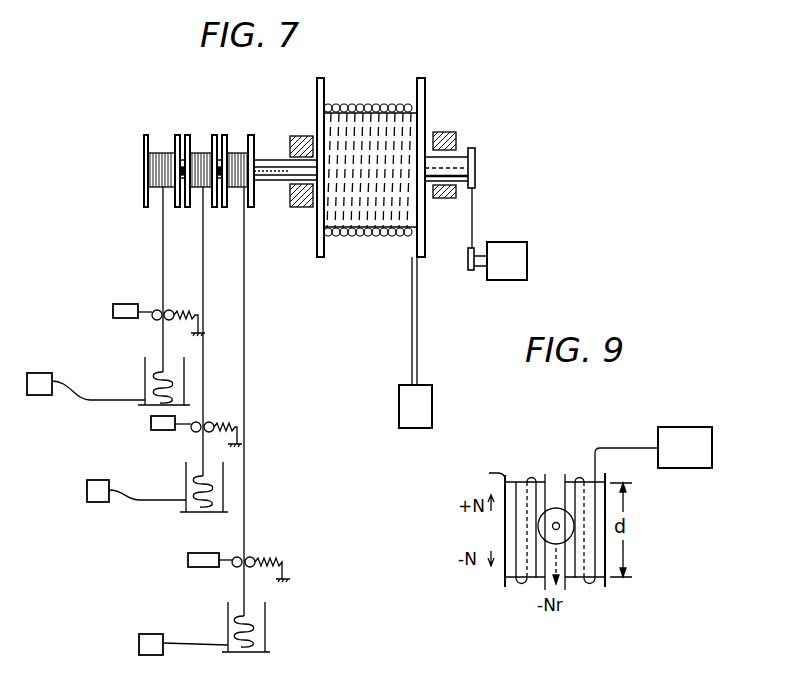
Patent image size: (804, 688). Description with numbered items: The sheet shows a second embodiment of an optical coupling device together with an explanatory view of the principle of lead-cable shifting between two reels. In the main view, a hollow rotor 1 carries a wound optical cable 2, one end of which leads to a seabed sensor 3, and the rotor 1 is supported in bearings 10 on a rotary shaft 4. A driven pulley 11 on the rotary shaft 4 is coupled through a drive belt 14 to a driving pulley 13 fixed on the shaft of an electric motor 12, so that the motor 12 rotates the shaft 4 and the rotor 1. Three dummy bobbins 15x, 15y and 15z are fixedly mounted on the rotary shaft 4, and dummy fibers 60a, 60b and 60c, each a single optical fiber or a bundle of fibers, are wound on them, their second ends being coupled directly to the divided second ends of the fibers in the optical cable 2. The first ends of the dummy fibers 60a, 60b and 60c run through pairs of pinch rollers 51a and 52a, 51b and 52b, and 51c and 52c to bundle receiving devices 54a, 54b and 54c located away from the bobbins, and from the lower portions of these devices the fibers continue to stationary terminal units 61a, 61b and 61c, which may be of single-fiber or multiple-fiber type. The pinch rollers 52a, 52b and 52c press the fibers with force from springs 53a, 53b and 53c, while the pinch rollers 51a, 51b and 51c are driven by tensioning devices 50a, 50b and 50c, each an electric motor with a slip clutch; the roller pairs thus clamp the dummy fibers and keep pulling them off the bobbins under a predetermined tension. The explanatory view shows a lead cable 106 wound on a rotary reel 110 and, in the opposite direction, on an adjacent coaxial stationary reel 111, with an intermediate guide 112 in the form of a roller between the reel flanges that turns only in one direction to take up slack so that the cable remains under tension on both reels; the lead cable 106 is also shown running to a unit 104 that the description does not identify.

In FIG. 7, the rotor 1 is at (318, 98).
In FIG. 7, the optical cable 2 is at (360, 102).
In FIG. 7, the seabed sensor 3 is at (422, 397).
In FIG. 7, the rotary shaft 4 is at (278, 173).
In FIG. 7, the bearings 10 is at (300, 136).
In FIG. 7, the driven pulley 11 is at (476, 177).
In FIG. 7, the electric motor 12 is at (505, 268).
In FIG. 7, the driving pulley 13 is at (467, 258).
In FIG. 7, the drive belt 14 is at (473, 208).
In FIG. 7, the dummy bobbin 15x is at (244, 151).
In FIG. 7, the dummy bobbin 15y is at (203, 151).
In FIG. 7, the dummy bobbin 15z is at (162, 151).
In FIG. 7, the tensioning device 50a is at (188, 560).
In FIG. 7, the tensioning device 50b is at (151, 422).
In FIG. 7, the tensioning device 50c is at (113, 310).
In FIG. 7, the pinch roller 51a is at (237, 568).
In FIG. 7, the pinch roller 51b is at (196, 433).
In FIG. 7, the pinch roller 51c is at (155, 310).
In FIG. 7, the pinch roller 52a is at (252, 558).
In FIG. 7, the pinch roller 52b is at (212, 424).
In FIG. 7, the pinch roller 52c is at (172, 309).
In FIG. 7, the spring 53a is at (277, 580).
In FIG. 7, the spring 53b is at (235, 420).
In FIG. 7, the spring 53c is at (198, 312).
In FIG. 7, the bundle receiving device 54a is at (265, 625).
In FIG. 7, the bundle receiving device 54b is at (192, 513).
In FIG. 7, the bundle receiving device 54c is at (145, 369).
In FIG. 7, the dummy fiber 60a is at (244, 271).
In FIG. 7, the dummy fiber 60b is at (203, 250).
In FIG. 7, the dummy fiber 60c is at (163, 228).
In FIG. 7, the stationary terminal unit 61a is at (140, 640).
In FIG. 7, the stationary terminal unit 61b is at (87, 493).
In FIG. 7, the stationary terminal unit 61c is at (41, 397).
In FIG. 9, the control unit 104 is at (683, 440).
In FIG. 9, the lead cable 106 is at (630, 448).
In FIG. 9, the rotary reel 110 is at (527, 481).
In FIG. 9, the stationary reel 111 is at (584, 482).
In FIG. 9, the intermediate guide 112 is at (556, 508).